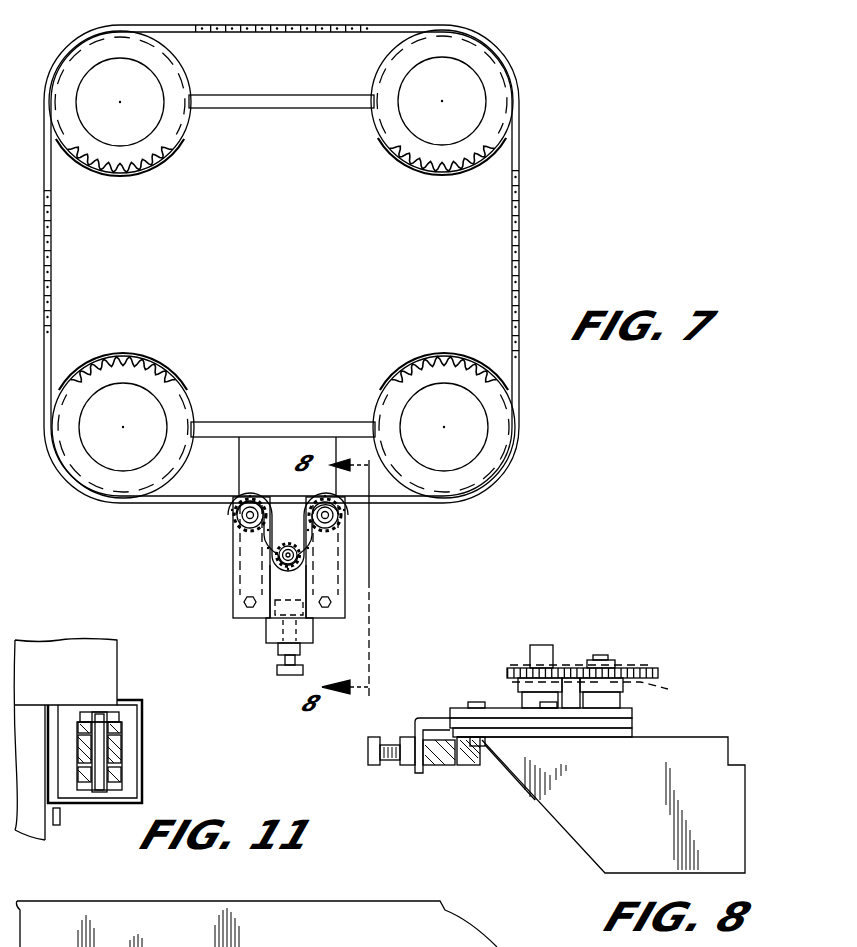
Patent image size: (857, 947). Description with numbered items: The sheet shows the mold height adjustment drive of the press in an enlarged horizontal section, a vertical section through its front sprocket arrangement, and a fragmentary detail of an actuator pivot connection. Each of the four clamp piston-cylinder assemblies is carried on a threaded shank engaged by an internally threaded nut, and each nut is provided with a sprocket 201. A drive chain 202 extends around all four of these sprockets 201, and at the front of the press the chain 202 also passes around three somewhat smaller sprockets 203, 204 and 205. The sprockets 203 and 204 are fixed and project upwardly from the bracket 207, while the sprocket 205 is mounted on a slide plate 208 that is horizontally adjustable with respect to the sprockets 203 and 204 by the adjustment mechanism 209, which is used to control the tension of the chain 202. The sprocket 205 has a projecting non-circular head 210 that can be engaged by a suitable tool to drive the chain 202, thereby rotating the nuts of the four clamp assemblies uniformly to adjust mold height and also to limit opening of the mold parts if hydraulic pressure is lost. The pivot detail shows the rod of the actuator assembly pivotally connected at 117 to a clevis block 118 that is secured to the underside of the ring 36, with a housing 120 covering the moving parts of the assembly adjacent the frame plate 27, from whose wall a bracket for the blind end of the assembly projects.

In FIG. 7, the sprocket 201 is at (167, 166).
In FIG. 7, the drive chain 202 is at (509, 236).
In FIG. 8, the drive chain 202 is at (608, 682).
In FIG. 7, the sprocket 203 is at (233, 512).
In FIG. 7, the sprocket 204 is at (347, 508).
In FIG. 8, the sprocket 204 is at (618, 672).
In FIG. 7, the sprocket 205 is at (288, 545).
In FIG. 8, the sprocket 205 is at (508, 673).
In FIG. 7, the bracket 207 is at (345, 565).
In FIG. 8, the bracket 207 is at (680, 737).
In FIG. 7, the slide plate 208 is at (275, 632).
In FIG. 8, the slide plate 208 is at (432, 717).
In FIG. 7, the adjustment mechanism 209 is at (258, 653).
In FIG. 8, the adjustment mechanism 209 is at (440, 775).
In FIG. 8, the non-circular head 210 is at (539, 648).
In FIG. 11, the ring 36 is at (103, 670).
In FIG. 11, the clevis block 118 is at (80, 722).
In FIG. 11, the housing 120 is at (138, 770).
In FIG. 11, the pivotal connection 117 is at (98, 792).
In FIG. 11, the frame plate 27 is at (48, 835).